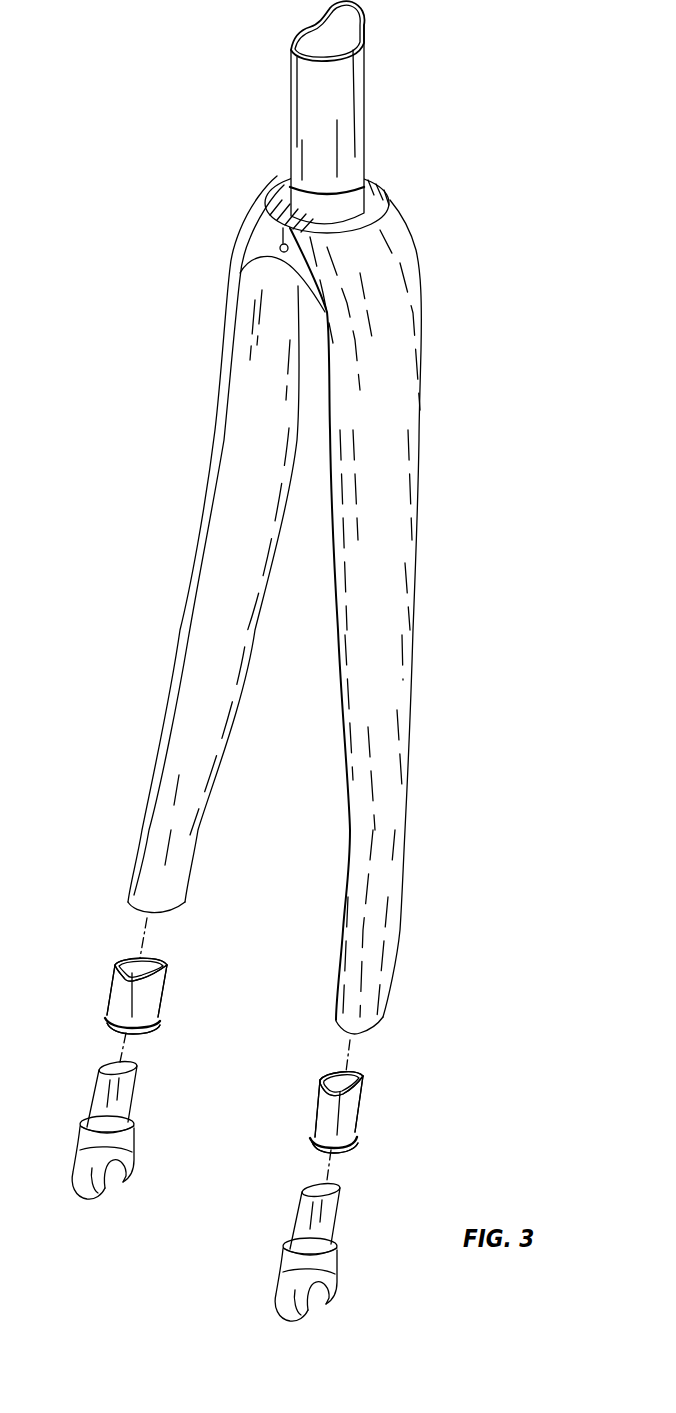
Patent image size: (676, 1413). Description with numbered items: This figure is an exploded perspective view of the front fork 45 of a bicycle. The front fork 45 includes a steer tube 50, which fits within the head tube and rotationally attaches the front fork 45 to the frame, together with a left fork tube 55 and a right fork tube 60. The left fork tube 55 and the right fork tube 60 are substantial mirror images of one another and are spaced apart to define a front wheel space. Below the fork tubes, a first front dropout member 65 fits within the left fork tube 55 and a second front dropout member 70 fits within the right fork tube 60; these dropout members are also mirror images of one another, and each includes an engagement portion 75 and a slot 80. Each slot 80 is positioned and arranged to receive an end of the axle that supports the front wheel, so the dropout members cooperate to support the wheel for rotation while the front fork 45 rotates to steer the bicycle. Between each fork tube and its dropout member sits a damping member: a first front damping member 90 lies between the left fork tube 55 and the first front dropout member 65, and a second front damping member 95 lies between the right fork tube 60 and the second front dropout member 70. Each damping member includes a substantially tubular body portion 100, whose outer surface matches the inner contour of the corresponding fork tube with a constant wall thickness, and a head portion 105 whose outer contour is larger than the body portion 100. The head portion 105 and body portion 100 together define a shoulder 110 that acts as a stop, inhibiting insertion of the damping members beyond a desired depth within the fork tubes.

The front fork 45 is at (340, 517).
The steer tube 50 is at (348, 92).
The left fork tube 55 is at (377, 670).
The right fork tube 60 is at (200, 647).
The first front dropout member 65 is at (348, 1279).
The second front dropout member 70 is at (133, 1140).
The engagement portion 75 is at (122, 1090).
The slot 80 is at (112, 1182).
The first front damping member 90 is at (397, 1085).
The second front damping member 95 is at (180, 971).
The body portion 100 is at (125, 990).
The head portion 105 is at (133, 1030).
The shoulder 110 is at (107, 1020).